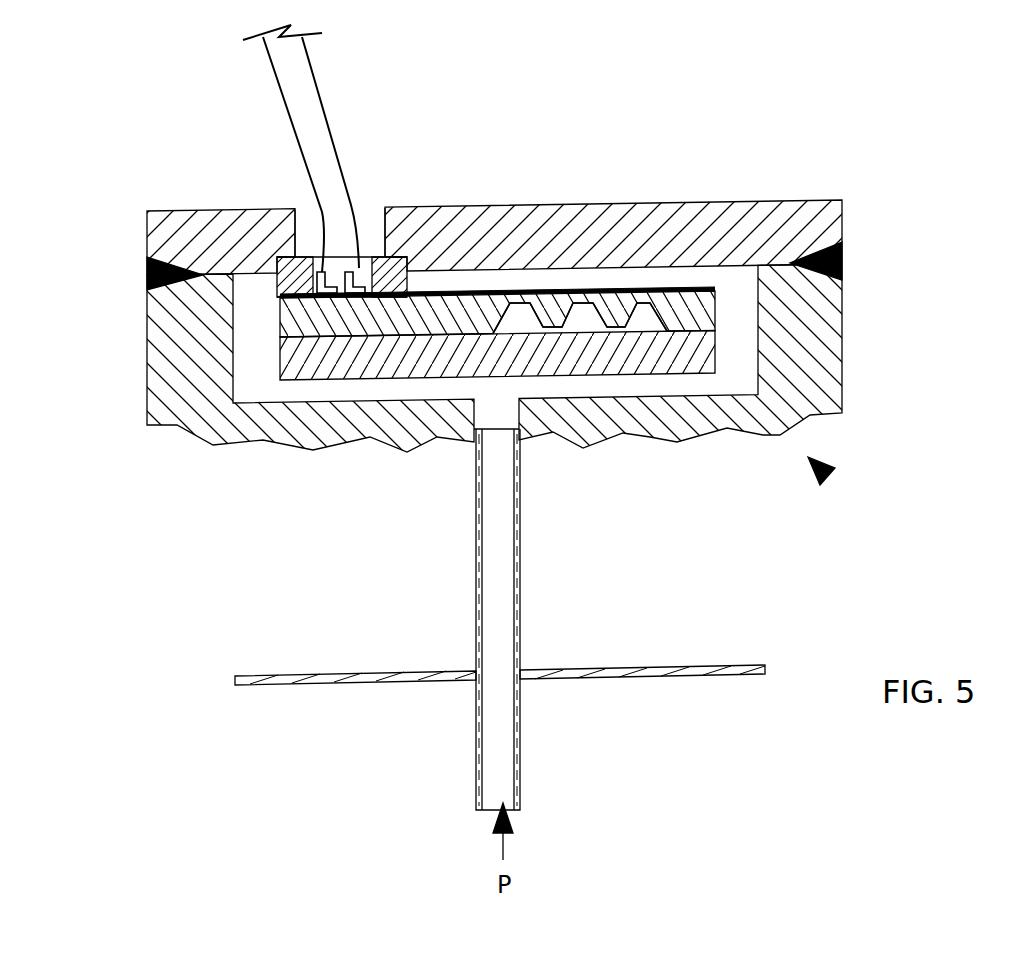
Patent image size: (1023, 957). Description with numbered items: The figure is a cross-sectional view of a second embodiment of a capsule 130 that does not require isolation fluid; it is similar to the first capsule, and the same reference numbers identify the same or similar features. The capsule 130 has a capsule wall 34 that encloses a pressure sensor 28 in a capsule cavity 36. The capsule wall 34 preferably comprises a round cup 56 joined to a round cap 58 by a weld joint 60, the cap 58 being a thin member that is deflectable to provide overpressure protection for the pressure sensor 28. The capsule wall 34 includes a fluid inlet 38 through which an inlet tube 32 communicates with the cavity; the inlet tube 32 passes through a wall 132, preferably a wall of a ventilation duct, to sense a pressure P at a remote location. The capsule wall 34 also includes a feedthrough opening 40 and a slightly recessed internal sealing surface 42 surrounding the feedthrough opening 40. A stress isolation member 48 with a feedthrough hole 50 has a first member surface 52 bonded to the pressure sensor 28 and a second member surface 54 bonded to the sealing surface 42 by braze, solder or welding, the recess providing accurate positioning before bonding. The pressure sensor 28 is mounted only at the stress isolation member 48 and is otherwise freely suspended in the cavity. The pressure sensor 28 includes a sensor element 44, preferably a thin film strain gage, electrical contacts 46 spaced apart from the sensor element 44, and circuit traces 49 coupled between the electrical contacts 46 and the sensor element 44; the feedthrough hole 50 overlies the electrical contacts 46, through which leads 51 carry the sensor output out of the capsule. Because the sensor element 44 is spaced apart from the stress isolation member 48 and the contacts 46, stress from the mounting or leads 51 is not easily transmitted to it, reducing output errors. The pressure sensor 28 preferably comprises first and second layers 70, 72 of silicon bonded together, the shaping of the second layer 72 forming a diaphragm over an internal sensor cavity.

The pressure sensor 28 is at (602, 284).
The inlet tube 32 is at (520, 530).
The capsule wall 34 is at (485, 329).
The capsule cavity 36 is at (257, 363).
The fluid inlet 38 is at (473, 412).
The feedthrough opening 40 is at (291, 161).
The sealing surface 42 is at (296, 252).
The sensor element 44 is at (545, 300).
The electrical contacts 46 is at (327, 302).
The stress isolation member 48 is at (290, 270).
The circuit traces 49 is at (467, 290).
The feedthrough hole 50 is at (375, 255).
The leads 51 is at (330, 117).
The first member surface 52 is at (294, 300).
The second member surface 54 is at (392, 252).
The round cup 56 is at (807, 348).
The round cap 58 is at (657, 253).
The weld joint 60 is at (842, 247).
The first layer 70 is at (602, 360).
The second layer 72 is at (601, 313).
The capsule 130 is at (828, 476).
The wall 132 is at (642, 665).